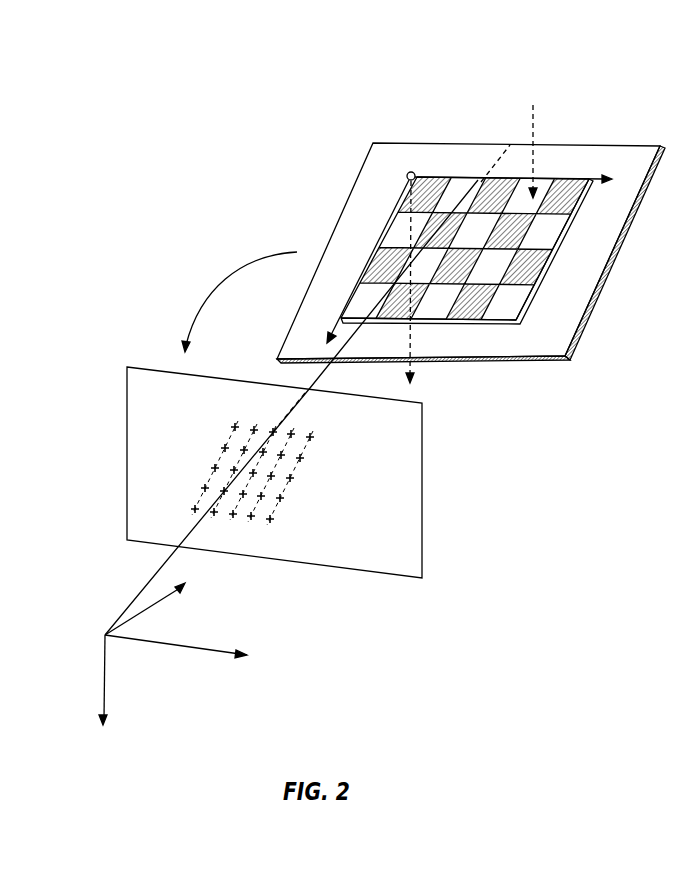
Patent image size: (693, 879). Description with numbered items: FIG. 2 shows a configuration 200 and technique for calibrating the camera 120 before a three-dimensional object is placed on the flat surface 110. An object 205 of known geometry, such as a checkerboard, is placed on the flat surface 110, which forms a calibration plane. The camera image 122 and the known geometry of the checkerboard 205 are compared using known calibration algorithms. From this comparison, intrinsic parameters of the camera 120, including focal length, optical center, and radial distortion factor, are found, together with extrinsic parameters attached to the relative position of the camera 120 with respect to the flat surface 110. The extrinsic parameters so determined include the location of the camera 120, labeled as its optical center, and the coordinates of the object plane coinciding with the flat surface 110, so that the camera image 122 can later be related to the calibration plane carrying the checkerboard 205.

The configuration 200 is at (190, 162).
The flat surface 110 is at (585, 315).
The object of known geometry 205 is at (572, 218).
The camera image 122 is at (422, 490).
The camera 120 is at (97, 640).